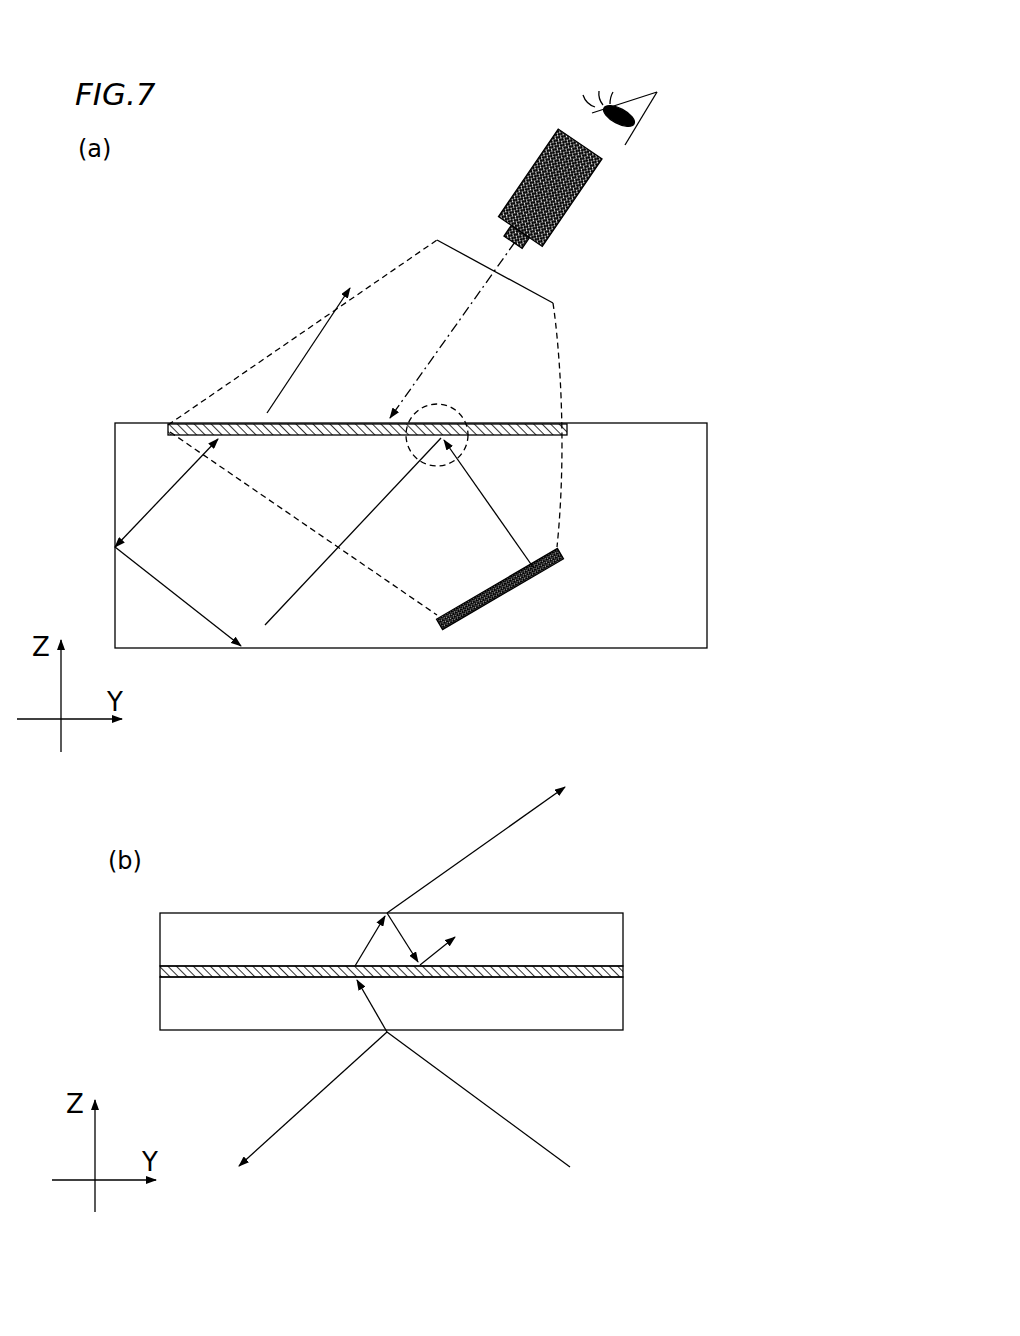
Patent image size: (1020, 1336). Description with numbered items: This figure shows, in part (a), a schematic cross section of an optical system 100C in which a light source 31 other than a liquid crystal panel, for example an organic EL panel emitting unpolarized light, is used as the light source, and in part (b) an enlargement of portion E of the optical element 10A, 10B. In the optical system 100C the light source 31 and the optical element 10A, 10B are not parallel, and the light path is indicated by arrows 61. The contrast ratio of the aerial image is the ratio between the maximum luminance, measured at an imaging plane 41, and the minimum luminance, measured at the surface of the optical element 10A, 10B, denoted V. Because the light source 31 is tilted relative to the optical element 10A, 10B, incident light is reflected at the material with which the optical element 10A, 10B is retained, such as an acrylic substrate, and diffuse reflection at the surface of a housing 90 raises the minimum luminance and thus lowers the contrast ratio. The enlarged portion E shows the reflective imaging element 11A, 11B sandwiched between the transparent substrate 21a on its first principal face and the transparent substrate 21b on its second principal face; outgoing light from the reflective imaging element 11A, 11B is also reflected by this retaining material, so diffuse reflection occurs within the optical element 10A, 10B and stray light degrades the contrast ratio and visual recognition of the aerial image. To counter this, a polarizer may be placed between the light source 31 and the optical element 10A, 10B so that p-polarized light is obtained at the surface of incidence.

The optical system 100C is at (734, 350).
The housing 90 is at (707, 453).
The optical element 10A is at (423, 741).
The optical element 10B is at (170, 430).
The imaging plane 41 is at (553, 303).
The portion E is at (437, 428).
The light source 31 is at (560, 552).
The surface of the optical element V is at (587, 173).
The arrows 61 is at (265, 625).
The transparent substrate 21a is at (612, 1017).
The transparent substrate 21b is at (603, 942).
The reflective imaging element 11A is at (476, 987).
The reflective imaging element 11B is at (623, 968).